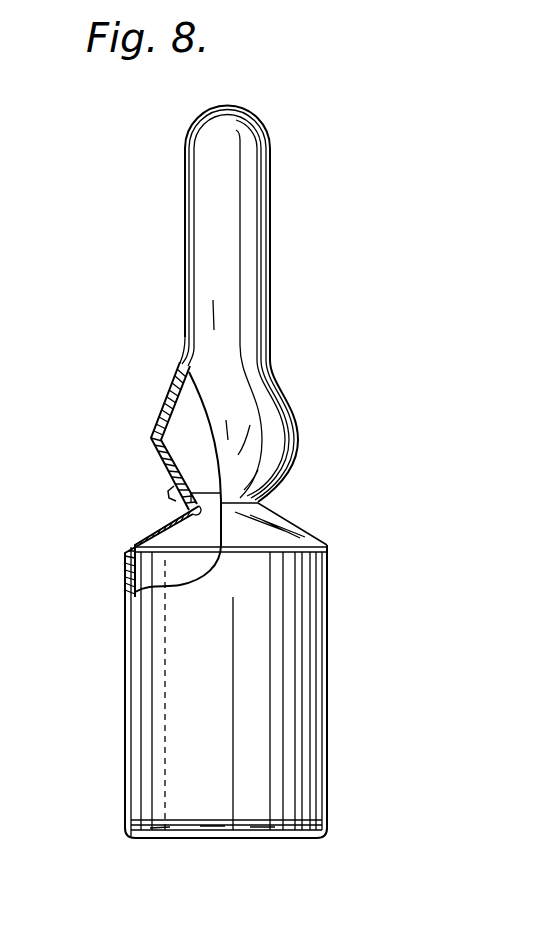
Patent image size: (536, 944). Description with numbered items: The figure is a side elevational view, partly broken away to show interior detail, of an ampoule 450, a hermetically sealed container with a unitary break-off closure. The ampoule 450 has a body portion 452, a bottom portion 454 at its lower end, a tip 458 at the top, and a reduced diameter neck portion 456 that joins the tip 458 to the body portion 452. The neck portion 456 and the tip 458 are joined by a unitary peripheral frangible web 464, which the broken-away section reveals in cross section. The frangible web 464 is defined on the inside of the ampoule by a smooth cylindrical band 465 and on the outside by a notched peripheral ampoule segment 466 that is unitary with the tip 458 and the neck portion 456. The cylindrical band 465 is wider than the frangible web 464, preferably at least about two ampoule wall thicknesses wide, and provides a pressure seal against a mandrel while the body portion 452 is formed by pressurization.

The ampoule 450 is at (336, 683).
The body portion 452 is at (173, 698).
The bottom portion 454 is at (220, 838).
The neck portion 456 is at (262, 527).
The tip 458 is at (225, 253).
The frangible web 464 is at (148, 532).
The cylindrical band 465 is at (158, 463).
The notched peripheral ampoule segment 466 is at (165, 497).